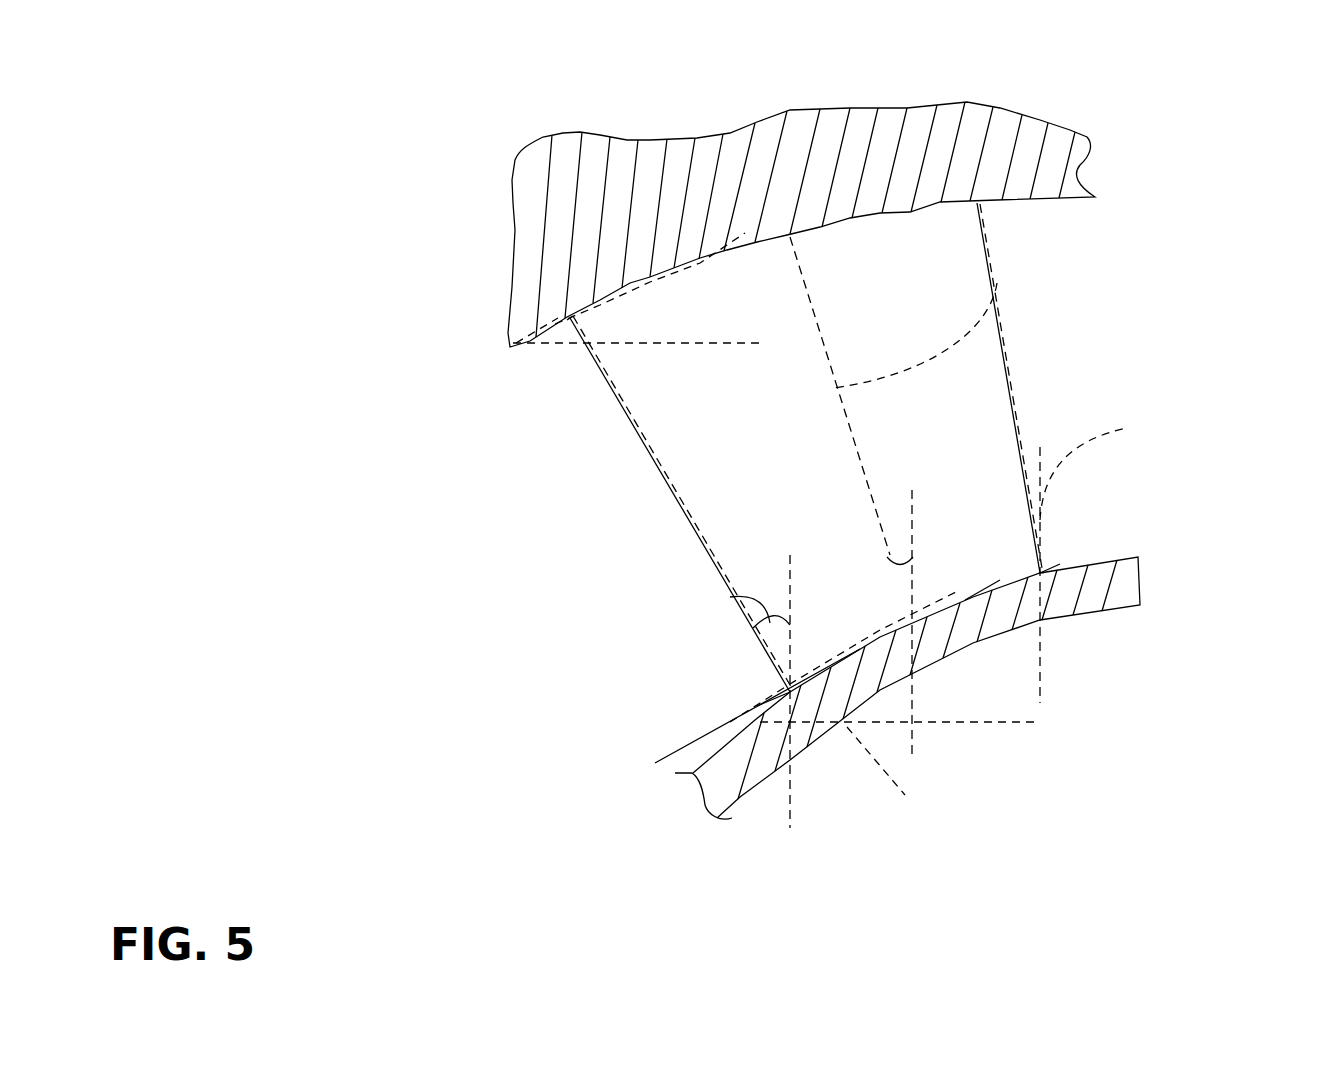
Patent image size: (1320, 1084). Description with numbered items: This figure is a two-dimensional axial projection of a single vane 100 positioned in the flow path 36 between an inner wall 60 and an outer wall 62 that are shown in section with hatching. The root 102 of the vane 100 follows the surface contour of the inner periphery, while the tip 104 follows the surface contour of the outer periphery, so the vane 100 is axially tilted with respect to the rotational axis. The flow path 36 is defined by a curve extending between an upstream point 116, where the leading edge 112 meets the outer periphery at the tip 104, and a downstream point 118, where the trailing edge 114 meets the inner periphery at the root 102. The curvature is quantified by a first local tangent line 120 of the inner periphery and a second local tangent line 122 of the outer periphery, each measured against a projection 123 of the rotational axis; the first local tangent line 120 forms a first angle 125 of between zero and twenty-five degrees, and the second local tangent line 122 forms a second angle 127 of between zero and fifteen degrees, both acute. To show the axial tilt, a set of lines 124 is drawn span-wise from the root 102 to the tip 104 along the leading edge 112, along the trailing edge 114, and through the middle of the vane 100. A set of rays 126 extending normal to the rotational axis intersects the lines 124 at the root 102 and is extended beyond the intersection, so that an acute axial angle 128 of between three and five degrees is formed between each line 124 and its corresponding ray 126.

The flow path 36 is at (588, 566).
The inner platform / endwall 60 is at (1140, 583).
The outer platform / casing 62 is at (1105, 141).
The vane 100 is at (792, 421).
The root 102 is at (998, 716).
The tip 104 is at (827, 225).
The leading edge 112 is at (613, 395).
The trailing edge 114 is at (998, 317).
The upstream point 116 is at (570, 318).
The downstream point 118 is at (1040, 573).
The first local tangent line 120 is at (757, 706).
The second local tangent line 122 is at (558, 317).
The projection 123 is at (513, 343).
The set of lines 124 is at (997, 283).
The first angle 125 is at (741, 713).
The set of rays 126 is at (1043, 687).
The second angle 127 is at (562, 330).
The acute axial angle 128 is at (730, 597).